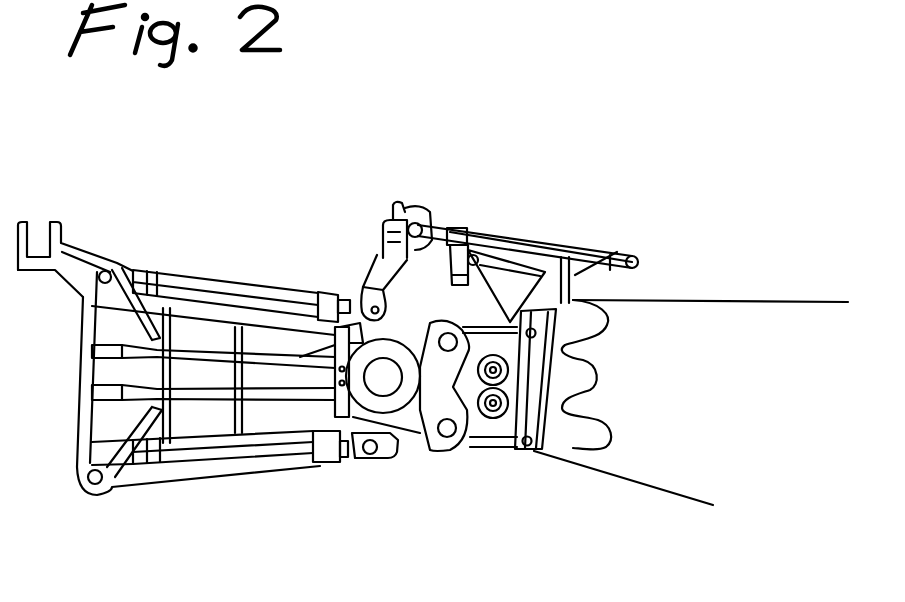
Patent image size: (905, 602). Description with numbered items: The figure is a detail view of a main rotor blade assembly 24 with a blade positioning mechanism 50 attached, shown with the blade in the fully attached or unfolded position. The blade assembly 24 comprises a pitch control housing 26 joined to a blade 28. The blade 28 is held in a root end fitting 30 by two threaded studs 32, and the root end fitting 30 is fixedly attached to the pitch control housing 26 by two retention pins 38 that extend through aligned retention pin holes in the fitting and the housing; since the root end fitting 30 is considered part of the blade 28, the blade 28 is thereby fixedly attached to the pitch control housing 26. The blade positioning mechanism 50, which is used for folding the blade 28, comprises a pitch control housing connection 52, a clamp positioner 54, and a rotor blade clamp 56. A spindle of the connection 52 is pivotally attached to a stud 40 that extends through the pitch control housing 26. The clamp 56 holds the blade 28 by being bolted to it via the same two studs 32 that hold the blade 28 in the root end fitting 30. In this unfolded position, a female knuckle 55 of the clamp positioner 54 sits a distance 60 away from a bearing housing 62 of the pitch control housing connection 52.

The main rotor blade assembly 24 is at (287, 153).
The pitch control housing 26 is at (257, 477).
The blade 28 is at (740, 301).
The root end fitting 30 is at (578, 448).
The threaded studs 32 is at (600, 310).
The retention pins 38 is at (430, 440).
The stud 40 is at (465, 368).
The blade positioning mechanism 50 is at (508, 224).
The pitch control housing connection 52 is at (357, 277).
The clamp positioner 54 is at (555, 245).
The female knuckle 55 is at (463, 227).
The rotor blade clamp 56 is at (603, 250).
The distance 60 is at (440, 200).
The bearing housing 62 is at (405, 207).